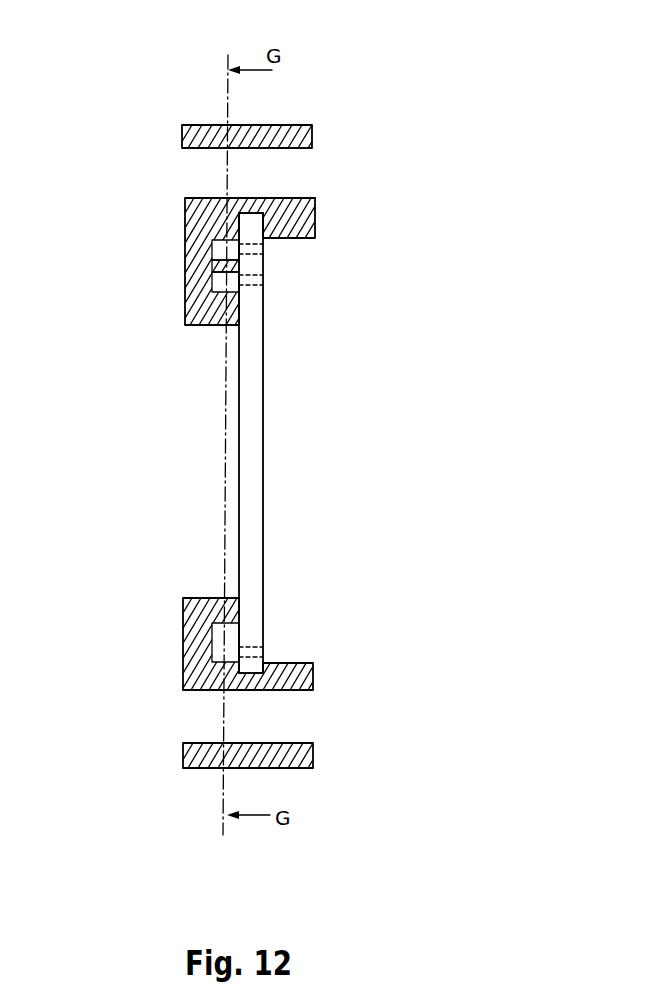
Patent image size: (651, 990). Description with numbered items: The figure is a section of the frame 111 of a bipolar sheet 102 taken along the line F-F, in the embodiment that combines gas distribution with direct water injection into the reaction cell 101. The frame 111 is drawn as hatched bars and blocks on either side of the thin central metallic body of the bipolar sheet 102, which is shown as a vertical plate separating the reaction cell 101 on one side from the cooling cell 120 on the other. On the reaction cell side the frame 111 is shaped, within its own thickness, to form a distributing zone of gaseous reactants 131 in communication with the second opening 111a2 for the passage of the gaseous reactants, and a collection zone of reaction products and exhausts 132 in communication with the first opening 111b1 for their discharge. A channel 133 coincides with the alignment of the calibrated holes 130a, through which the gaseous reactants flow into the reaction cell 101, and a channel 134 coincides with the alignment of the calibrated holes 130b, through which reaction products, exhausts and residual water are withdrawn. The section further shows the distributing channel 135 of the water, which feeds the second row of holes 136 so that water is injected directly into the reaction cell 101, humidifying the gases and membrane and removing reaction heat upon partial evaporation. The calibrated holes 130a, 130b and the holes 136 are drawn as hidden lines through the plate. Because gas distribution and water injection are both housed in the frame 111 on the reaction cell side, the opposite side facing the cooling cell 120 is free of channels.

The reaction cell 101 is at (322, 430).
The bipolar sheet 102 is at (272, 107).
The frame 111 is at (296, 125).
The second opening for the passage of gaseous reactants 111a2 is at (293, 182).
The first opening for the discharge of reaction products 111b1 is at (293, 722).
The cooling cell 120 is at (207, 432).
The calibrated holes for feeding gaseous reactants 130a is at (265, 248).
The calibrated holes for withdrawal of reaction products 130b is at (255, 647).
The distributing zone of gaseous reactants 131 is at (224, 199).
The collection zone of reaction products and exhausts 132 is at (223, 690).
The channel coinciding with holes 130a 133 is at (217, 239).
The channel coinciding with holes 130b 134 is at (220, 642).
The distributing channel of the water to be injected 135 is at (220, 278).
The holes for injecting water 136 is at (265, 282).